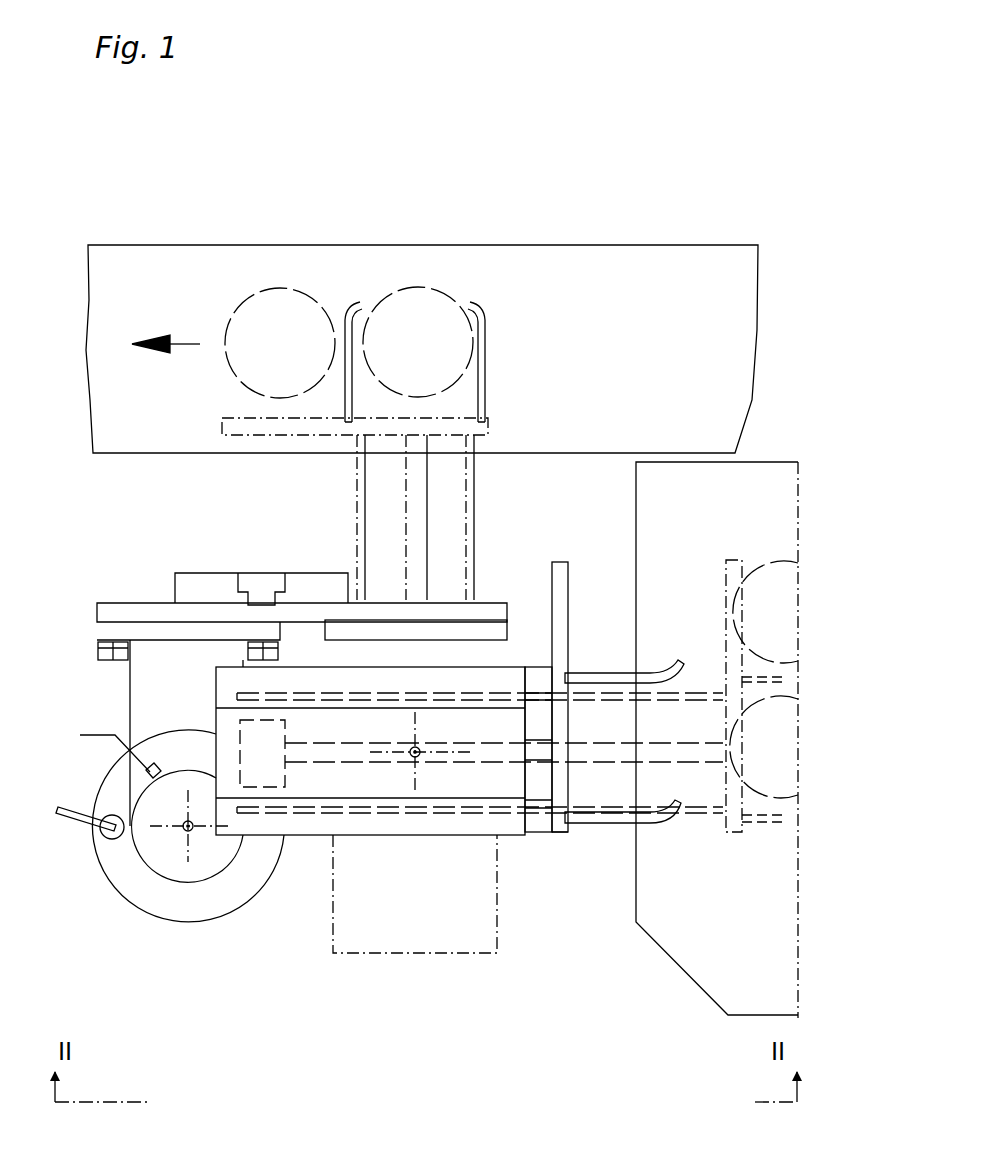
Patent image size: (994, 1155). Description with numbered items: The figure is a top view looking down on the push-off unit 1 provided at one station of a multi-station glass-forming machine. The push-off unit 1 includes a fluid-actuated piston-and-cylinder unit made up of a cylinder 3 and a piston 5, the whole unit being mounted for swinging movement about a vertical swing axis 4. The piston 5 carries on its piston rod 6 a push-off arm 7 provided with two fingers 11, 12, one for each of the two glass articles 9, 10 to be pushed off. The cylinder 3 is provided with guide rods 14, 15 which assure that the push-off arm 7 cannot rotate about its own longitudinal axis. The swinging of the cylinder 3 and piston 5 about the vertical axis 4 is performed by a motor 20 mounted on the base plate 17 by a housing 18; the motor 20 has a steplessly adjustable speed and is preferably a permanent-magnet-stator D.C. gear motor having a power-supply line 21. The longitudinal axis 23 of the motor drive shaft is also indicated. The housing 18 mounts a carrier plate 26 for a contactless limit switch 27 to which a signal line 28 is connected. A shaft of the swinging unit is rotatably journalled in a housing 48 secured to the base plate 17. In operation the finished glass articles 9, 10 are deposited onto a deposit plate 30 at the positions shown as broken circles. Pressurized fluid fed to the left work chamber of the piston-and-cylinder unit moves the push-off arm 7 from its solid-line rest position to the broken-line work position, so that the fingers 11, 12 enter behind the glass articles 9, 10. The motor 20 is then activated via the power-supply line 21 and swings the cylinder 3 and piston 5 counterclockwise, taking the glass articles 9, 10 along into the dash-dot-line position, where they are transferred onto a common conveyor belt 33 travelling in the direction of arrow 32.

The push-off unit 1 is at (297, 935).
The cylinder 3 is at (515, 835).
The vertical swing axis 4 is at (410, 757).
The piston 5 is at (285, 728).
The piston rod 6 is at (531, 760).
The push-off arm 7 is at (492, 425).
The glass article 9 is at (455, 298).
The glass article 10 is at (283, 288).
The finger 11 is at (488, 360).
The finger 12 is at (350, 312).
The guide rod 14 is at (540, 833).
The guide rod 15 is at (537, 667).
The base plate 17 is at (97, 612).
The housing 18 is at (130, 677).
The motor 20 is at (150, 858).
The power-supply line 21 is at (80, 735).
The longitudinal axis of the motor drive shaft 23 is at (196, 833).
The carrier plate 26 is at (165, 922).
The contactless limit switch 27 is at (108, 840).
The signal line 28 is at (63, 815).
The deposit plate 30 is at (774, 462).
The arrow 32 is at (185, 344).
The conveyor belt 33 is at (660, 245).
The housing 48 is at (507, 625).